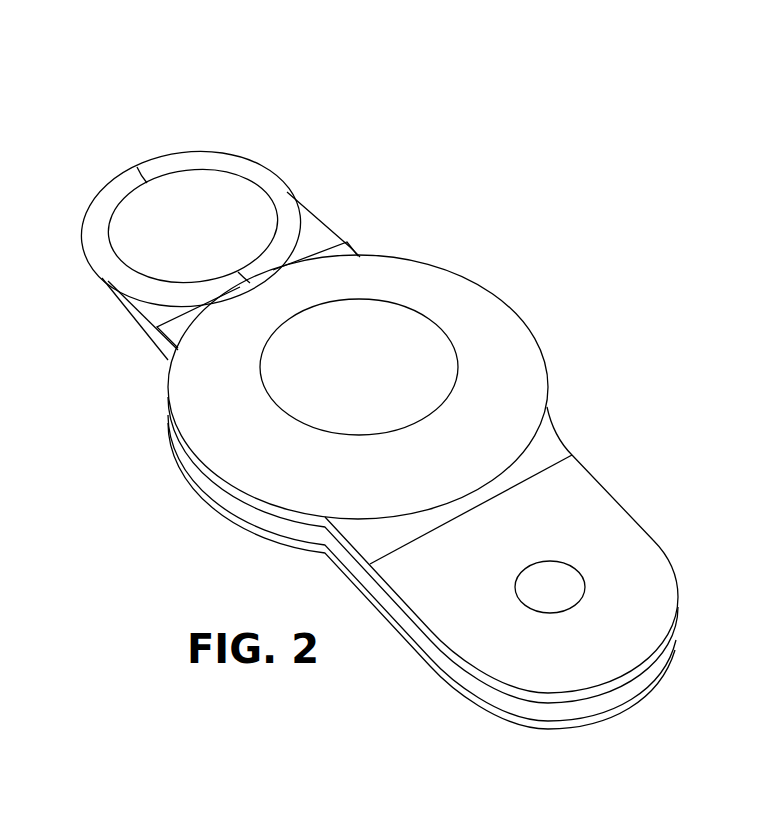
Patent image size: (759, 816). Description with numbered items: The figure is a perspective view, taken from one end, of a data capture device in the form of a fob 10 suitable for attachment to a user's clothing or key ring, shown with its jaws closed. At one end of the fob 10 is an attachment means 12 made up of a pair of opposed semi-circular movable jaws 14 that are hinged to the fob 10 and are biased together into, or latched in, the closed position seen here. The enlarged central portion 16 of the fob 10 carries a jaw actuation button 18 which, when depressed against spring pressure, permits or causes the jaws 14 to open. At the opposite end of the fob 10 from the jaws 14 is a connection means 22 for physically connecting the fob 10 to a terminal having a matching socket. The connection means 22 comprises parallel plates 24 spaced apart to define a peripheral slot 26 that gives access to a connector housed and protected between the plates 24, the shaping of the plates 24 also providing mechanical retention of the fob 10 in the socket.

The fob 10 is at (430, 208).
The attachment means 12 is at (184, 100).
The movable jaws 14 is at (112, 187).
The enlarged central portion 16 is at (511, 320).
The jaw actuation button 18 is at (371, 358).
The connection means 22 is at (665, 503).
The parallel plates 24 is at (648, 663).
The peripheral slot 26 is at (535, 715).